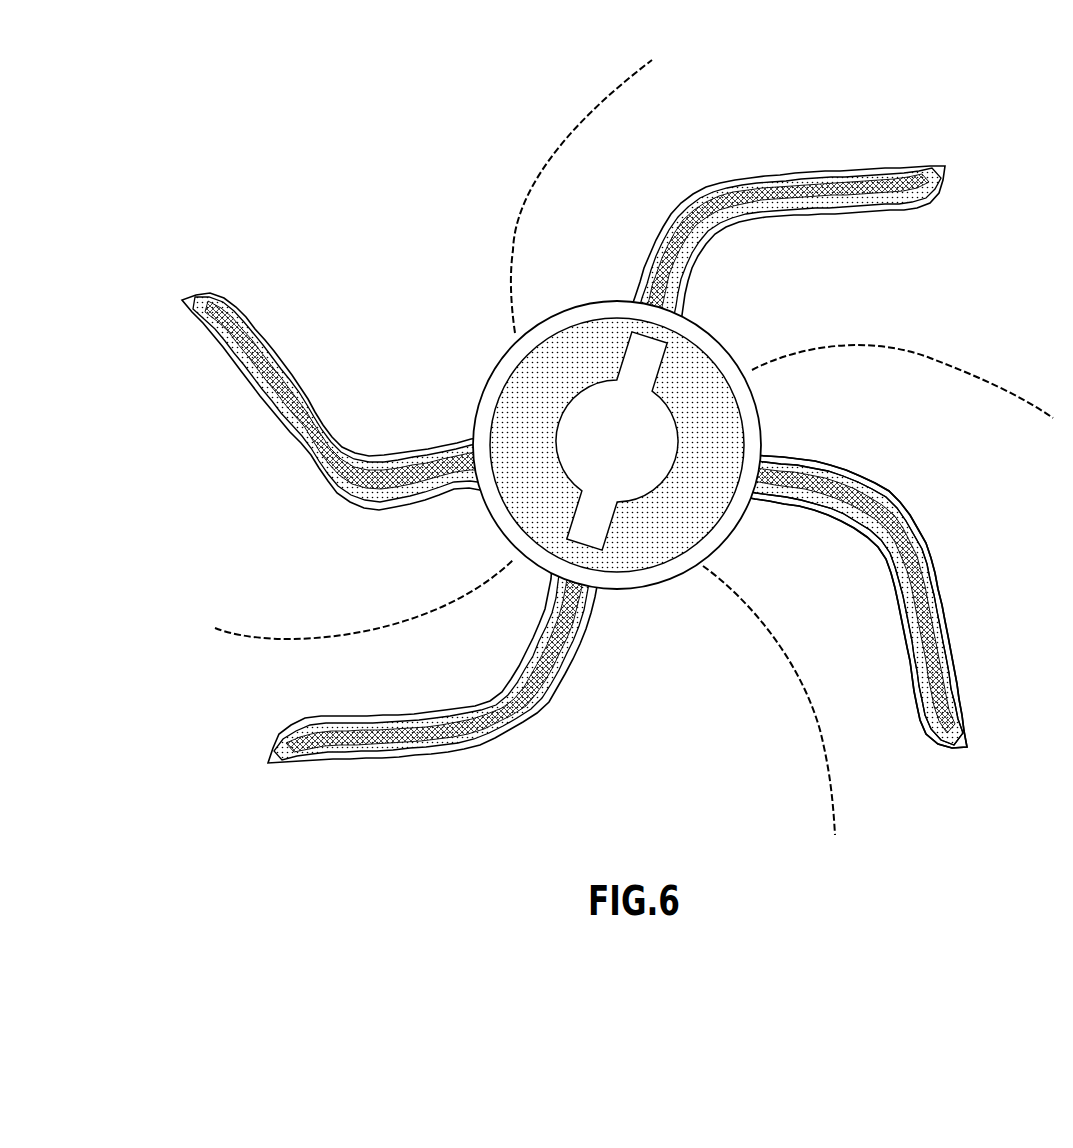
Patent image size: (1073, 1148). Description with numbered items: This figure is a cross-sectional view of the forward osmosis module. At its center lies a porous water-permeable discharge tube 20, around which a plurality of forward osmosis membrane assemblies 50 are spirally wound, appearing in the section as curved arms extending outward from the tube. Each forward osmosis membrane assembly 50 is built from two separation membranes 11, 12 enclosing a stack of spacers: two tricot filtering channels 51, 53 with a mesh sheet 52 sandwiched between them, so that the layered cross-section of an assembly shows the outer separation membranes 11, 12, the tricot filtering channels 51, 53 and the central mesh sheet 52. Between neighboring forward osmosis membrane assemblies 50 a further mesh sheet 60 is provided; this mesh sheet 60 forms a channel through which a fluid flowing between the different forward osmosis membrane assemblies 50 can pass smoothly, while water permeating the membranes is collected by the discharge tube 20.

The separation membrane 11 is at (940, 618).
The separation membrane 12 is at (903, 627).
The porous water-permeable discharge tube 20 is at (690, 365).
The forward osmosis membrane assembly 50 is at (868, 656).
The tricot filtering channel 51 is at (963, 749).
The mesh sheet 52 is at (947, 748).
The tricot filtering channel 53 is at (934, 745).
The mesh sheet 60 is at (562, 147).